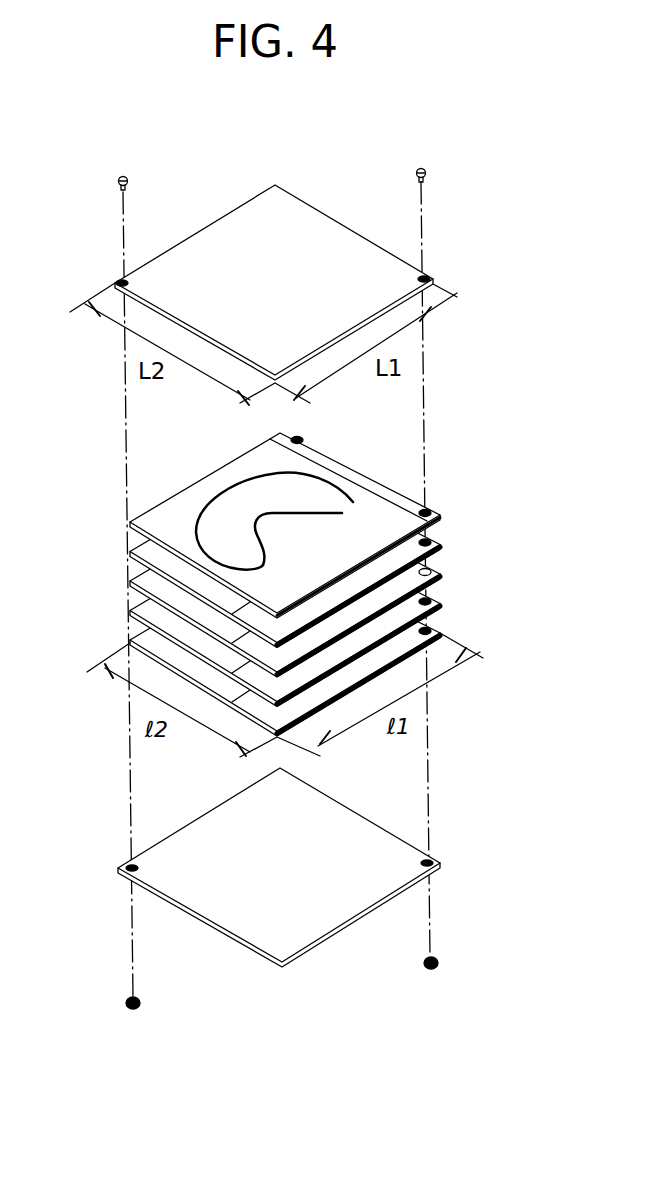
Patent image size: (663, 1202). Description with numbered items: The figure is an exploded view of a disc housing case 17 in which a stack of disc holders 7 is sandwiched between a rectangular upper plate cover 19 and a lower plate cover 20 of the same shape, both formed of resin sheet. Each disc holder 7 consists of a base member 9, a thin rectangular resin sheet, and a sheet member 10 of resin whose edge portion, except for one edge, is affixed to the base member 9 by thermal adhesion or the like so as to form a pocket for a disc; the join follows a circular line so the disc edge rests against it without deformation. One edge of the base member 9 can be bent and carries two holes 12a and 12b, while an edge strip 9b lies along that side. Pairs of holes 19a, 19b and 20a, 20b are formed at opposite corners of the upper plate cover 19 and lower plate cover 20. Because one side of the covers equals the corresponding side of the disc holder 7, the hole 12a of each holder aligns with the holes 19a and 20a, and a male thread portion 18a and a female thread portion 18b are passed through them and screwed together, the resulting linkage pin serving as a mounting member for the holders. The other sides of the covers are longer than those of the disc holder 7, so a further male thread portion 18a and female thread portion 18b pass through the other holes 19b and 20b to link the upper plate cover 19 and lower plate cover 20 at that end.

The stacked plate assembly 17 is at (188, 142).
The male thread portion 18a is at (118, 182).
The female thread portion 18b is at (141, 1000).
The upper plate cover 19 is at (274, 272).
The hole 19a is at (419, 280).
The hole 19b is at (128, 283).
The disc holder 7 is at (294, 569).
The base member 9 is at (368, 518).
The edge strip of separator plate 9b is at (348, 463).
The sheet member 10 is at (285, 510).
The hole 12a is at (478, 553).
The hole 12b is at (303, 439).
The lower plate cover 20 is at (279, 874).
The hole 20a is at (424, 864).
The hole 20b is at (138, 868).